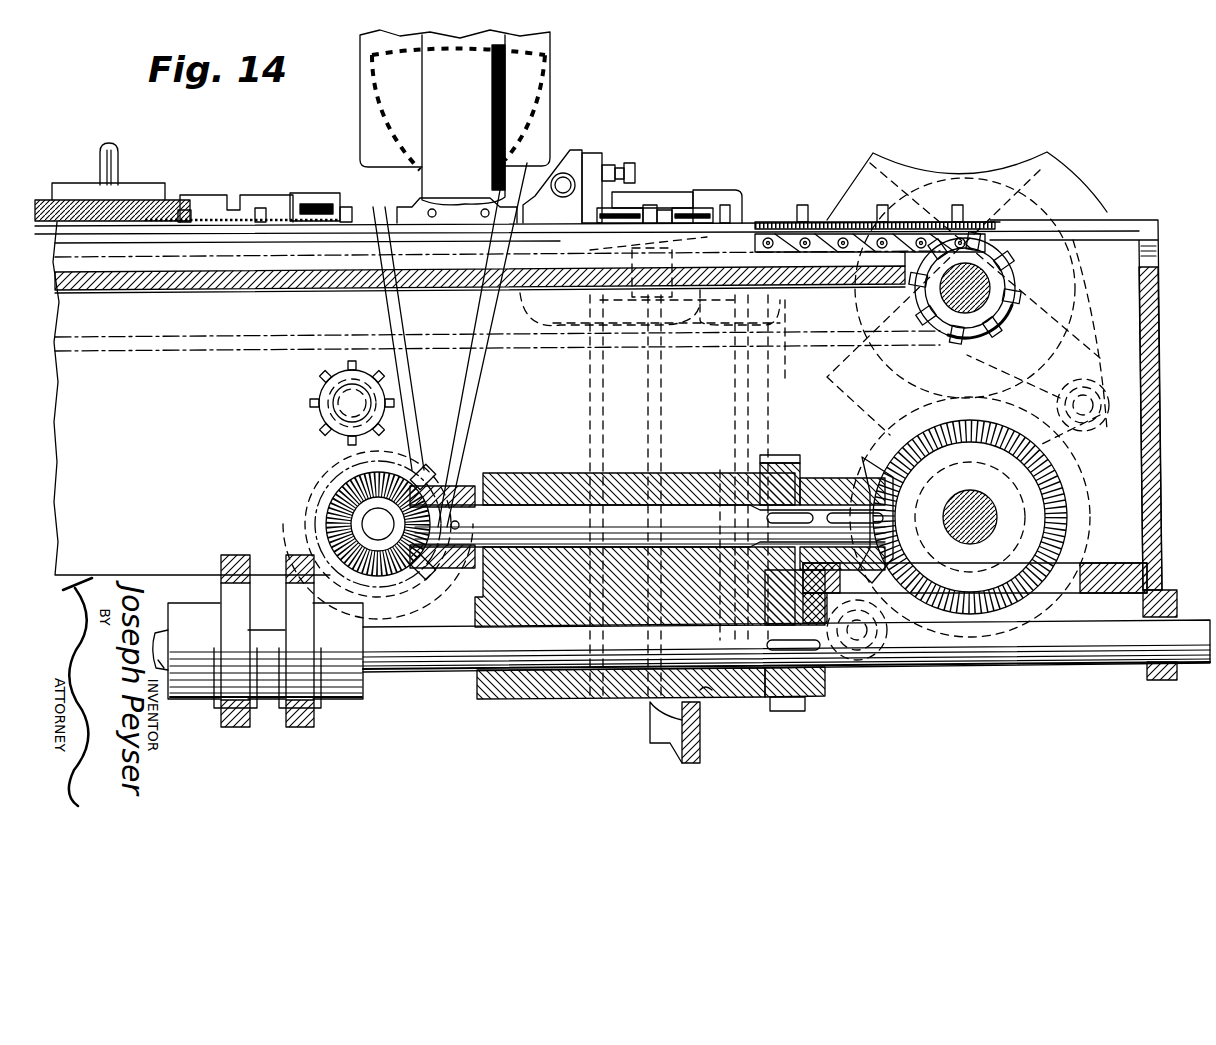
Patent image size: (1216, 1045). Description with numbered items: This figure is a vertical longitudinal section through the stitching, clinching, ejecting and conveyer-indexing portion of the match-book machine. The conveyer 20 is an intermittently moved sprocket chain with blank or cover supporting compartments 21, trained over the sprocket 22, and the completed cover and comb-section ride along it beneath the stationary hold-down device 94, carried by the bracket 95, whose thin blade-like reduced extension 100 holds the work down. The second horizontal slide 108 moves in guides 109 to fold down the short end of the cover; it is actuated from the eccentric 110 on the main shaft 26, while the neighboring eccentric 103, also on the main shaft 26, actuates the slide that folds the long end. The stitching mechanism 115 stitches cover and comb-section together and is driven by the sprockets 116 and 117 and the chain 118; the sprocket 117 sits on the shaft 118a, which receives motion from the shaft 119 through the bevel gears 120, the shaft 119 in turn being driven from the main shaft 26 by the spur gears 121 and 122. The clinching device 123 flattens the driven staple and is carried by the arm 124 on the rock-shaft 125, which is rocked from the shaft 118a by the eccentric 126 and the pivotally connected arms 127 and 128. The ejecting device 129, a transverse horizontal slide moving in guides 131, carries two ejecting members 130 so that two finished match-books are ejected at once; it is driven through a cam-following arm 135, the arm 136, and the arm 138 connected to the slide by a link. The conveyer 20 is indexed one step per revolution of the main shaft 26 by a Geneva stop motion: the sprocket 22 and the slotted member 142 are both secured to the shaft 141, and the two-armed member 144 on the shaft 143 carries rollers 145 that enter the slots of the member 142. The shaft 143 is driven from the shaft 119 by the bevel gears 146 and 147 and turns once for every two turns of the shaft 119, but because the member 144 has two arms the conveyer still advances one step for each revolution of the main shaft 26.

The conveyer 20 is at (953, 205).
The blank or cover supporting compartments or surfaces 21 is at (812, 243).
The sprocket 22 is at (1010, 275).
The main shaft 26 is at (1088, 645).
The hold-down device 94 is at (140, 200).
The bracket 95 is at (113, 165).
The reduced extension 100 is at (232, 210).
The eccentric 103 is at (232, 556).
The second horizontal slide 108 is at (305, 203).
The guides 109 is at (195, 200).
The eccentric 110 is at (312, 720).
The stitching mechanism 115 is at (455, 126).
The sprocket 116 is at (362, 90).
The sprocket 117 is at (405, 440).
The chain 118 is at (388, 310).
The shaft 118a is at (345, 522).
The shaft 119 is at (527, 513).
The bevel gears 120 is at (440, 478).
The spur gear 121 is at (786, 712).
The spur gear 122 is at (790, 455).
The clinching device 123 is at (574, 144).
The arm 124 is at (538, 350).
The rock-shaft 125 is at (762, 226).
The eccentric 126 is at (470, 462).
The arm 127 is at (620, 470).
The arm 128 is at (766, 366).
The ejecting device 129 is at (668, 210).
The ejecting members 130 is at (625, 212).
The guides 131 is at (735, 222).
The arm 135 is at (703, 742).
The arm 136 is at (703, 692).
The arm 138 is at (652, 400).
The shaft 141 is at (978, 292).
The slotted member 142 is at (1000, 185).
The shaft 143 is at (1000, 516).
The two-armed member 144 is at (1150, 430).
The rollers 145 is at (1148, 398).
The bevel gear 146 is at (848, 475).
The bevel gear 147 is at (968, 400).